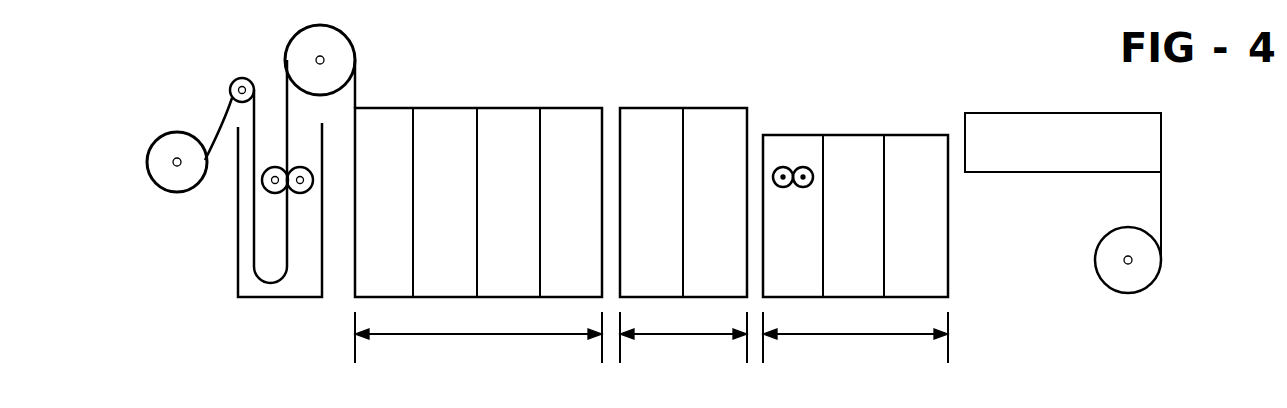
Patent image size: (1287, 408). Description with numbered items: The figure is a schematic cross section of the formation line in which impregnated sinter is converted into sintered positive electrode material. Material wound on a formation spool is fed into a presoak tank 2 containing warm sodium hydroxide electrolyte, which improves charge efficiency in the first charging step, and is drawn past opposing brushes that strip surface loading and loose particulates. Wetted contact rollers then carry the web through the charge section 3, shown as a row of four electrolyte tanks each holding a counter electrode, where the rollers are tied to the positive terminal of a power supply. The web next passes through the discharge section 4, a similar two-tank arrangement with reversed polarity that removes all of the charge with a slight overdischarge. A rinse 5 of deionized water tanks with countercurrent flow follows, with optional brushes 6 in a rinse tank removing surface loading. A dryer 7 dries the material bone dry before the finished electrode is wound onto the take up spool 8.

The web tank / feed loop 2 is at (238, 250).
The charge section 3 is at (278, 193).
The discharge station 4 is at (648, 338).
The DI rinse station 5 is at (800, 338).
The nip rollers 6 is at (795, 163).
The dryer 7 is at (1073, 130).
The take-up roll 8 is at (1113, 250).